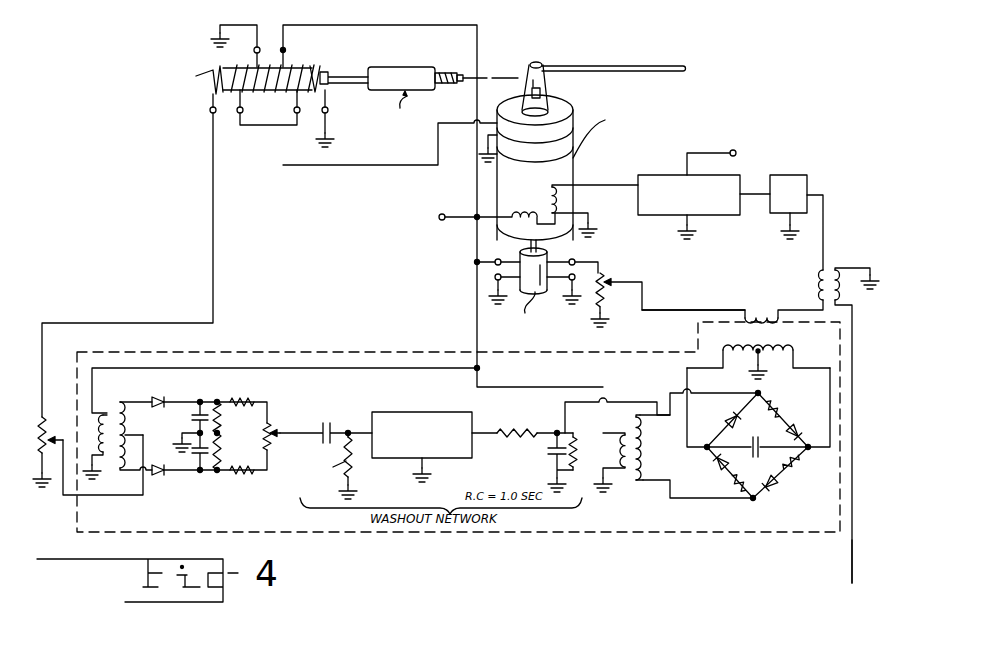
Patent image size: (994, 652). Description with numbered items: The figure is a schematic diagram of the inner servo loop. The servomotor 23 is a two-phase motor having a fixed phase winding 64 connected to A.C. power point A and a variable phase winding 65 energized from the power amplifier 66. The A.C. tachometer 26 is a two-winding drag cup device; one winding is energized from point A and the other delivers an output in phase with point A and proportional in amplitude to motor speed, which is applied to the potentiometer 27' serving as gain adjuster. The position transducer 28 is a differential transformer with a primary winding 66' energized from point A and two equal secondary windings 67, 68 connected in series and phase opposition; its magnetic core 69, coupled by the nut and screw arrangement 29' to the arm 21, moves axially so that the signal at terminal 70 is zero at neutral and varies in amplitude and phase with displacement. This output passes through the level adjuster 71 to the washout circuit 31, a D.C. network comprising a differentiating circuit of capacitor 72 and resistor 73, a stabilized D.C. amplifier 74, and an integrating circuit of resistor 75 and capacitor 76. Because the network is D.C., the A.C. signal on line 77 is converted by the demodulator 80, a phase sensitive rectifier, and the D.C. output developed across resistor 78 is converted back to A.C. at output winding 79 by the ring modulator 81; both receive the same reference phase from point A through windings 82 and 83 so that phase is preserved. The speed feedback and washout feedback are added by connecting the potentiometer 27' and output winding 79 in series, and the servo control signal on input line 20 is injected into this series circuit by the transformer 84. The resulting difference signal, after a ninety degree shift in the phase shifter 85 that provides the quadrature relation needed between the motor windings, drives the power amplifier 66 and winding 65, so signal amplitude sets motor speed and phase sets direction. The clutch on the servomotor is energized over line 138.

The input line 20 is at (852, 557).
The arm 21 is at (541, 86).
The servomotor 23 is at (565, 168).
The A.C. tachometer 26 is at (548, 258).
The potentiometer 27' is at (668, 290).
The position transducer 28 is at (188, 48).
The nut and screw arrangement 29' is at (418, 103).
The washout circuit 31 is at (283, 352).
The fixed phase winding 64 is at (527, 212).
The variable phase winding 65 is at (550, 190).
The power amplifier 66 is at (722, 192).
The primary winding 66' is at (278, 106).
The secondary winding 67 is at (200, 80).
The secondary winding 68 is at (322, 70).
The magnetic core 69 is at (243, 70).
The terminal 70 is at (208, 110).
The level adjuster 71 is at (33, 409).
The capacitor 72 is at (321, 428).
The resistor 73 is at (335, 466).
The stabilized D.C. amplifier 74 is at (414, 411).
The resistor 75 is at (513, 429).
The capacitor 76 is at (556, 465).
The line 77 is at (66, 497).
The resistor 78 is at (577, 437).
The output winding 79 is at (782, 331).
The demodulator 80 is at (199, 390).
The ring modulator 81 is at (806, 396).
The winding 82 is at (108, 413).
The winding 83 is at (617, 435).
The transformer 84 is at (833, 268).
The phase shifter 85 is at (808, 178).
The line 138 is at (357, 172).